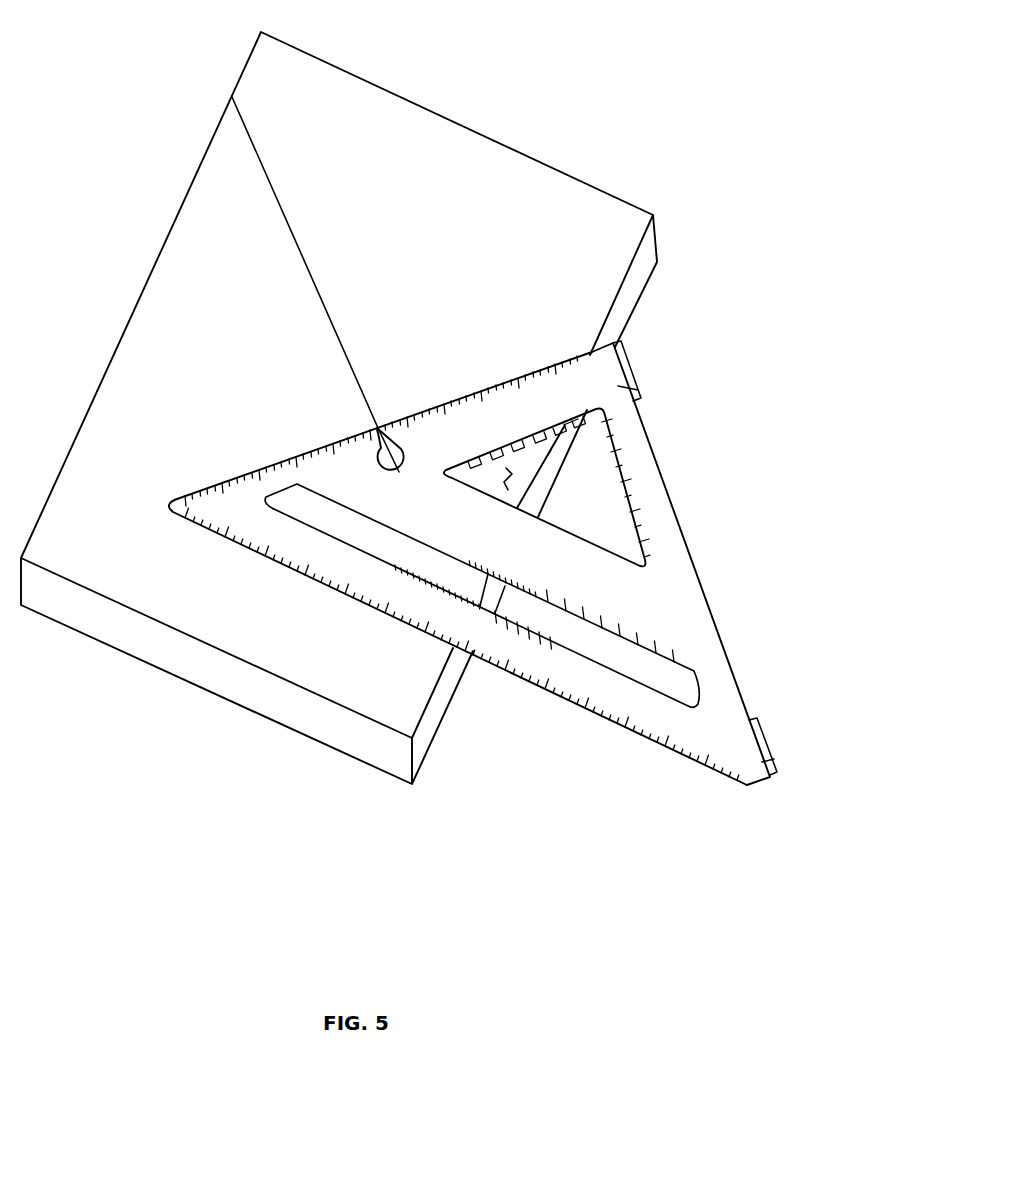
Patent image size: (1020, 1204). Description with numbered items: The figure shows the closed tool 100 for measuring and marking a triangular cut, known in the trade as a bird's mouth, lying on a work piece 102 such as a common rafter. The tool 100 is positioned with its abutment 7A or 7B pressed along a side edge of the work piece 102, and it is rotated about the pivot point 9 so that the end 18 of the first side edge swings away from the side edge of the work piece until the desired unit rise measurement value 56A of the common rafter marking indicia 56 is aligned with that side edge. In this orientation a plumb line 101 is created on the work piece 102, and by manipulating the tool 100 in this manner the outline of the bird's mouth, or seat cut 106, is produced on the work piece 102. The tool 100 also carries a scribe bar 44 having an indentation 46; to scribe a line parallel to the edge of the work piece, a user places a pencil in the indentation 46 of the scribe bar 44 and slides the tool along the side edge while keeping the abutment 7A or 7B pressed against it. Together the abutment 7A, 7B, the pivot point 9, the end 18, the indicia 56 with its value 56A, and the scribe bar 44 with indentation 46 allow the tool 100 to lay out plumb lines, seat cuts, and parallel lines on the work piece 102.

The tool 100 is at (526, 555).
The plumb line 101 is at (273, 183).
The work piece 102 is at (344, 408).
The pivot point 9 is at (597, 355).
The end of the first side edge 18 is at (757, 793).
The indentation 46 is at (566, 425).
The scribe bar 44 is at (548, 455).
The seat cut 106 is at (506, 487).
The common rafter marking indicia 56 is at (663, 698).
The unit rise measurement value 56A is at (472, 624).
The abutment 7A is at (738, 564).
The abutment 7B is at (728, 668).